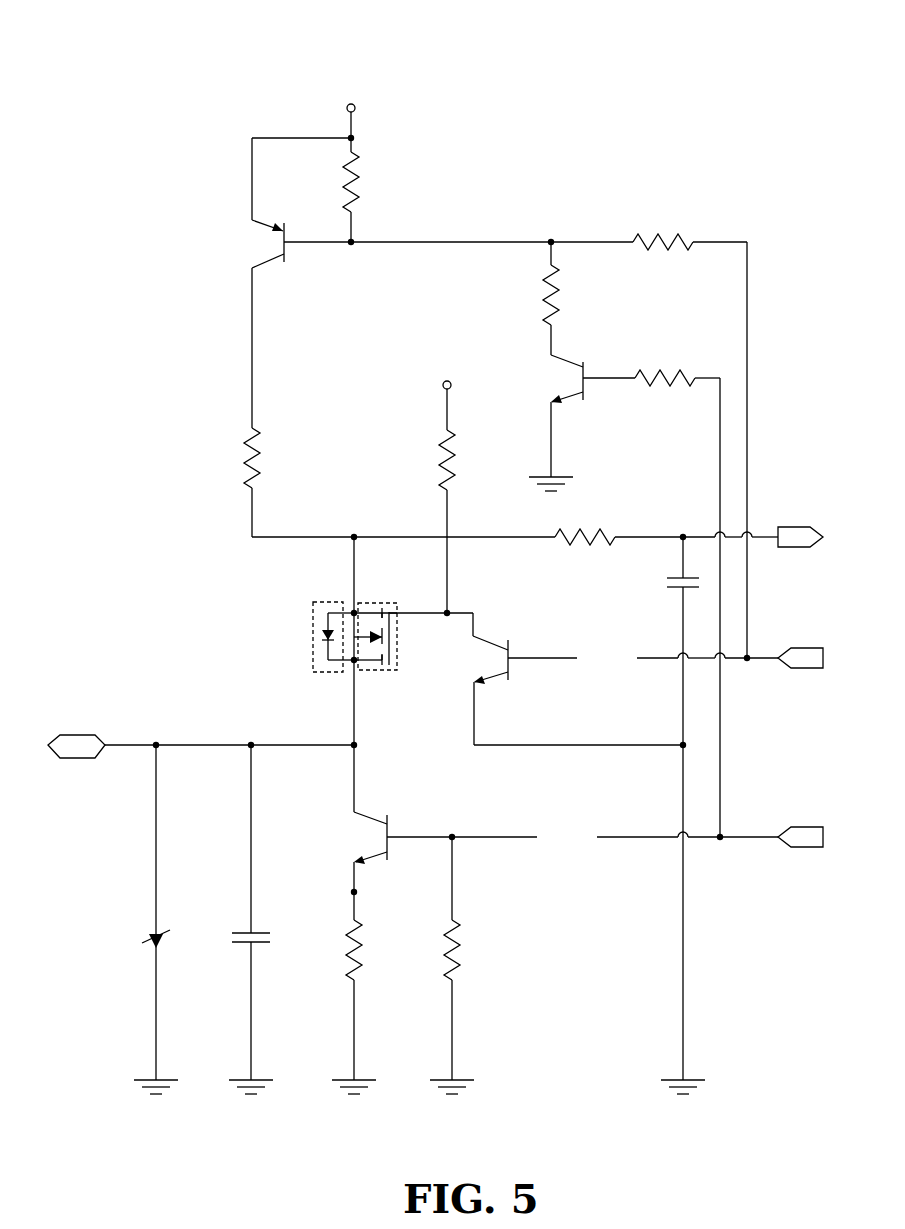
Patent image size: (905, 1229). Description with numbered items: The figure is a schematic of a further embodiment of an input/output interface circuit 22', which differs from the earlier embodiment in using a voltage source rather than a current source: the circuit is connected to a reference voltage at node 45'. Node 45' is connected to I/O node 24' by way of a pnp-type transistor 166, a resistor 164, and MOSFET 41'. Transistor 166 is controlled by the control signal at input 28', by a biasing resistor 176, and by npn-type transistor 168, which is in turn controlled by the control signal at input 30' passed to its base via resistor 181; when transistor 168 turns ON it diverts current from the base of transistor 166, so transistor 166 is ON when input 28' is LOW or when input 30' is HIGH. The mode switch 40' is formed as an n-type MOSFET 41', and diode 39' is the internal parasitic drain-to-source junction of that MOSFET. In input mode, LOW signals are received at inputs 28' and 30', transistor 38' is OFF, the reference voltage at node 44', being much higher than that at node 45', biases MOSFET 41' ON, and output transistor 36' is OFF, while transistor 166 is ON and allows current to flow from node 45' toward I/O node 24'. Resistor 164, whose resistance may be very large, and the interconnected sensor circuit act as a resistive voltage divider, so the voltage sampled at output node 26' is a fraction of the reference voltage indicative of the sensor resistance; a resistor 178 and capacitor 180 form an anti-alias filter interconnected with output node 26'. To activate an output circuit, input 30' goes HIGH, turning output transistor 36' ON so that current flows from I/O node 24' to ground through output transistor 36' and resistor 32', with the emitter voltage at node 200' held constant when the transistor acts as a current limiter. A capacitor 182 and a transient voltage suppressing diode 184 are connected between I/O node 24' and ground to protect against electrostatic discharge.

The I/O interface circuit 22' is at (106, 49).
The reference voltage node 45' is at (380, 161).
The pnp-type transistor 166 is at (286, 262).
The biasing resistor 176 is at (654, 238).
The npn-type transistor 168 is at (588, 368).
The resistor 181 is at (676, 372).
The resistor 164 is at (243, 452).
The reference voltage node 44' is at (475, 421).
The resistor 178 is at (600, 530).
The output node 26' is at (800, 514).
The n-type MOSFET 41' is at (293, 653).
The diode 39' is at (309, 617).
The mode switch 40' is at (397, 655).
The transistor 38' is at (506, 644).
The capacitor 180 is at (674, 586).
The control input 28' is at (800, 633).
The I/O node 24' is at (76, 770).
The output transistor 36' is at (386, 823).
The node 200' is at (319, 891).
The resistor 32' is at (381, 950).
The transient voltage suppressing diode 184 is at (149, 936).
The capacitor 182 is at (243, 933).
The control input 30' is at (800, 813).